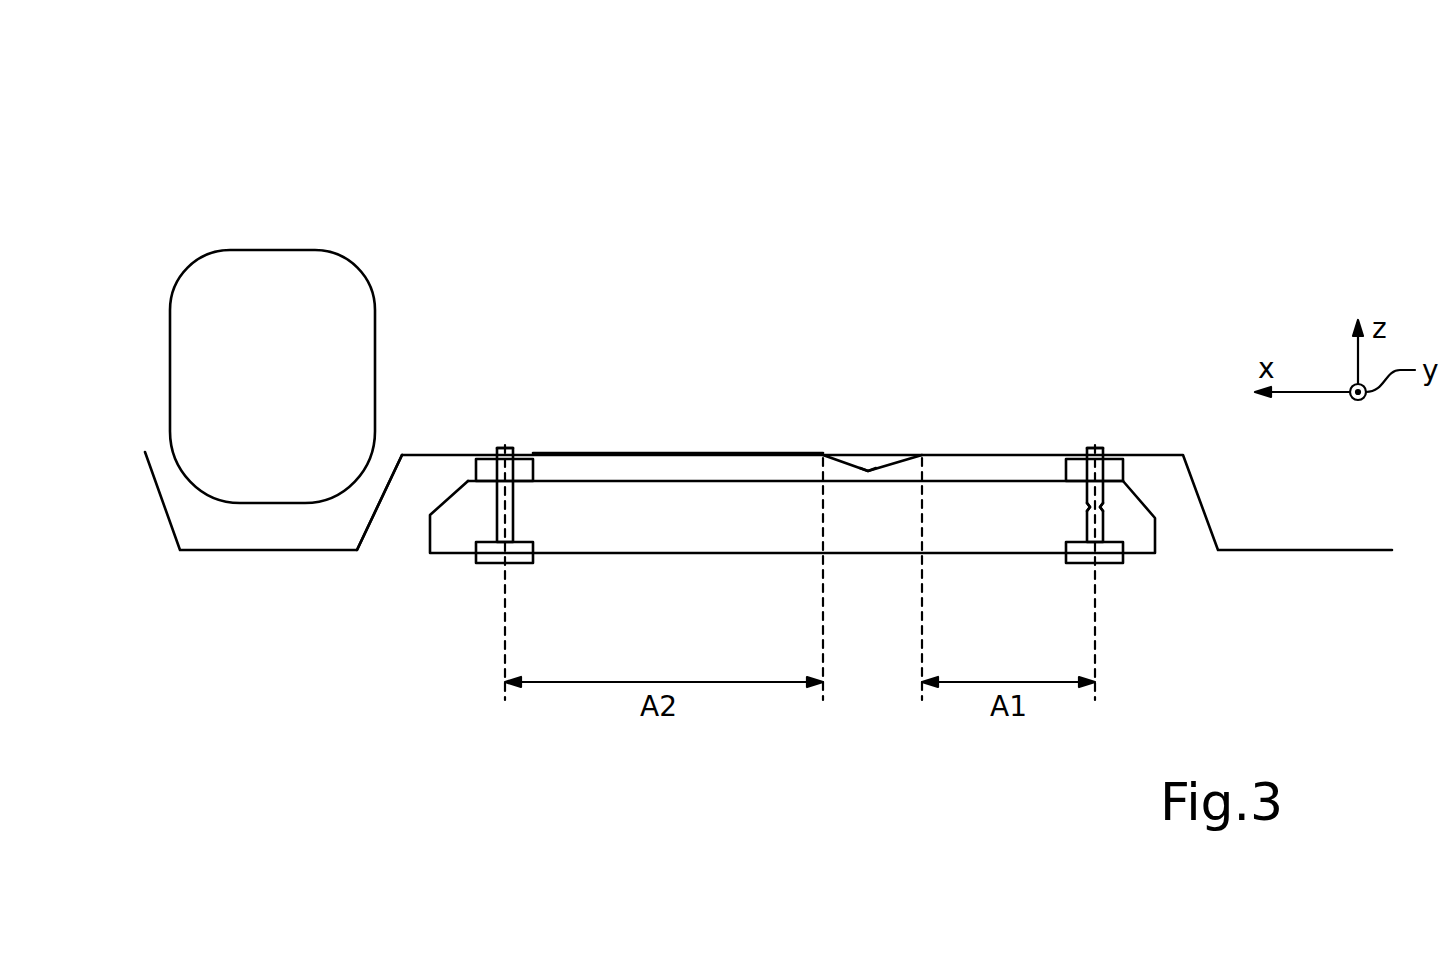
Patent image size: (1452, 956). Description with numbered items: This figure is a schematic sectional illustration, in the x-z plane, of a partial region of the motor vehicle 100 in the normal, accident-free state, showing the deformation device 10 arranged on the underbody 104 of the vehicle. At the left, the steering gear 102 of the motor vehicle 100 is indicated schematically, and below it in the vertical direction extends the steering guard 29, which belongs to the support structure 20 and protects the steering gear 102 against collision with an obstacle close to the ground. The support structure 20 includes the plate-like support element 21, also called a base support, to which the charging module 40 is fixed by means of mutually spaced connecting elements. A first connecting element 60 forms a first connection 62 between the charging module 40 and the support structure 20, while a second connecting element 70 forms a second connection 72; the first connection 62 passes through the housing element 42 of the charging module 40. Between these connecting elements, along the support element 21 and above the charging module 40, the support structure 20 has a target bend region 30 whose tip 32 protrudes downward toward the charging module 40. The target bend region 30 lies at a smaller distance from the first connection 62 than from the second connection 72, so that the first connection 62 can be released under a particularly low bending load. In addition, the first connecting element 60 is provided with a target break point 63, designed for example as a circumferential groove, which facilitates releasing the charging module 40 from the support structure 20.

The motor vehicle 100 is at (160, 157).
The steering gear 102 is at (312, 250).
The steering guard 29 is at (242, 552).
The underbody 104 is at (358, 613).
The deformation device 10 is at (897, 486).
The support structure 20 is at (1206, 453).
The support element 21 is at (712, 453).
The target bend region 30 is at (922, 446).
The tip 32 is at (868, 489).
The charging module 40 is at (792, 500).
The housing element 42 is at (1012, 480).
The second connecting element 70 is at (500, 448).
The second connection 72 is at (524, 434).
The first connecting element 60 is at (1103, 448).
The first connection 62 is at (1078, 434).
The target break point 63 is at (1119, 517).